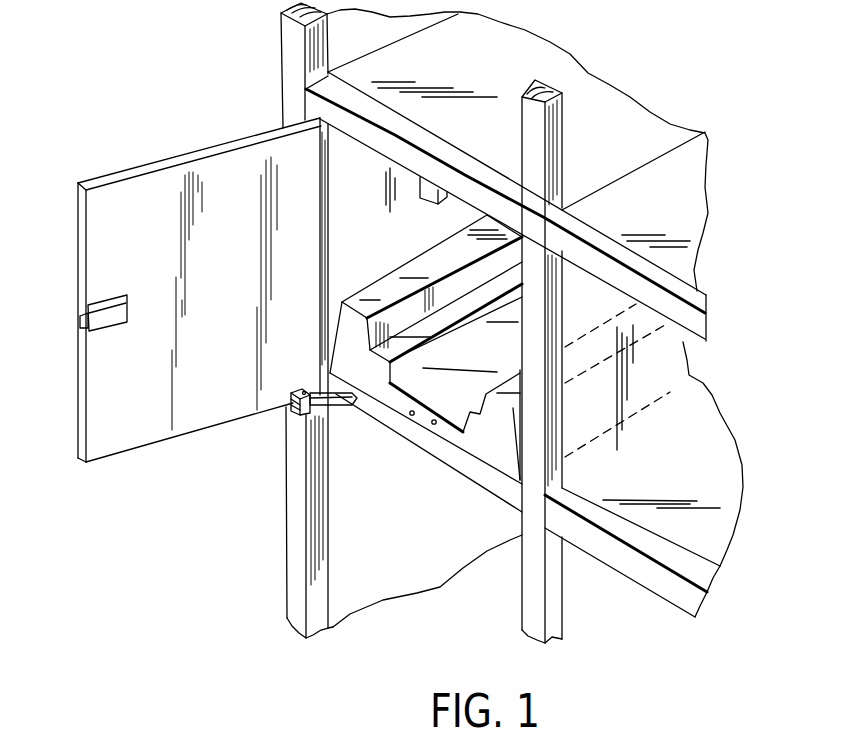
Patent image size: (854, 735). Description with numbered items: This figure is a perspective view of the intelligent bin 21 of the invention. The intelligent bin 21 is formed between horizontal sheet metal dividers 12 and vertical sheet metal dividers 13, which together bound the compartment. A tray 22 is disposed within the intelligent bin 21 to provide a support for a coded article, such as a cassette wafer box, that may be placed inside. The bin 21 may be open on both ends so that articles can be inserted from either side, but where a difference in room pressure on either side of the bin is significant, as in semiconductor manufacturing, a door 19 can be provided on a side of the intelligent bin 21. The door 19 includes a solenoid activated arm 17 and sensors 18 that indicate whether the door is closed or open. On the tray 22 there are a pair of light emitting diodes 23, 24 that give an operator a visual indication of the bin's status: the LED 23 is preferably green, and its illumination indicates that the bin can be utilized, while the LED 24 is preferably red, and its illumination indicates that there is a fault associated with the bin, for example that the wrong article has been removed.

The horizontal sheet metal divider 12 is at (410, 132).
The vertical sheet metal divider 13 is at (288, 482).
The solenoid activated arm 17 is at (341, 408).
The sensor 18 is at (428, 193).
The door 19 is at (133, 184).
The intelligent bin 21 is at (345, 162).
The tray 22 is at (366, 290).
The light emitting diode 23 is at (410, 417).
The light emitting diode 24 is at (434, 426).